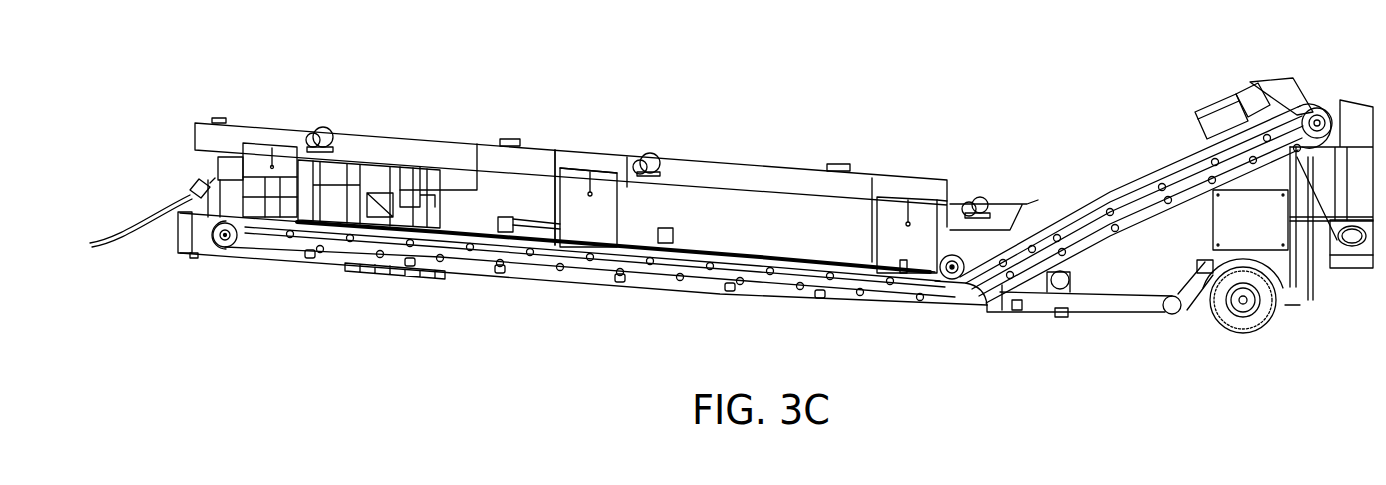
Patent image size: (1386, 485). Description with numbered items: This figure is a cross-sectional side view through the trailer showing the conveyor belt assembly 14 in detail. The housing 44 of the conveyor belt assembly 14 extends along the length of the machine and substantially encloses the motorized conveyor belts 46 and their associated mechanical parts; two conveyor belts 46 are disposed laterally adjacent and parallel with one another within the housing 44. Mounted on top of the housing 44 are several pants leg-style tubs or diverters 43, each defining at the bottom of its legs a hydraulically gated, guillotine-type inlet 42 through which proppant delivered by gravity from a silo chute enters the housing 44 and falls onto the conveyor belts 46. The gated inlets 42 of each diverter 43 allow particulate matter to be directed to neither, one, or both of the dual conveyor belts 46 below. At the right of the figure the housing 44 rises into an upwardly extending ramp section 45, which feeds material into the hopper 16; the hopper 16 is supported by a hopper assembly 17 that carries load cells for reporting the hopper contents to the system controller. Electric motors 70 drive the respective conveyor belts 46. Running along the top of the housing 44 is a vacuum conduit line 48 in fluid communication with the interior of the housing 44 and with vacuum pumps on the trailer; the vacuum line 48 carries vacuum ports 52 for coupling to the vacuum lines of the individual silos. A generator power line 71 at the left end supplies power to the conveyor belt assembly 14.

The conveyor belt assembly 14 is at (775, 133).
The hopper 16 is at (1349, 122).
The hopper assembly 17 is at (1340, 298).
The inlet 42 is at (251, 127).
The pants leg-style tub or diverter 43 is at (272, 165).
The housing 44 is at (727, 252).
The ramp section 45 is at (1083, 201).
The conveyor belts 46 is at (277, 247).
The vacuum conduit line 48 is at (433, 150).
The vacuum ports 52 is at (331, 128).
The electric motors 70 is at (1210, 103).
The generator power line 71 is at (130, 225).